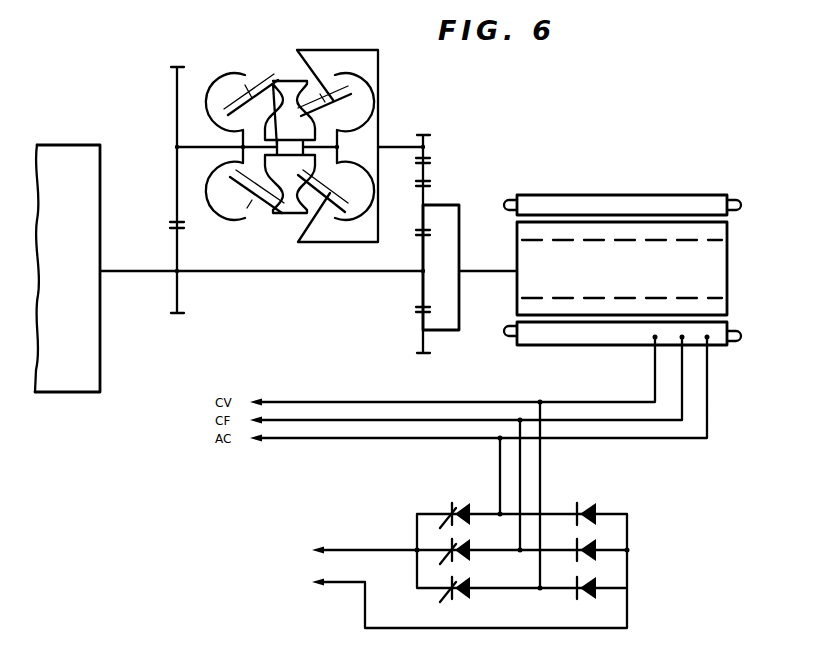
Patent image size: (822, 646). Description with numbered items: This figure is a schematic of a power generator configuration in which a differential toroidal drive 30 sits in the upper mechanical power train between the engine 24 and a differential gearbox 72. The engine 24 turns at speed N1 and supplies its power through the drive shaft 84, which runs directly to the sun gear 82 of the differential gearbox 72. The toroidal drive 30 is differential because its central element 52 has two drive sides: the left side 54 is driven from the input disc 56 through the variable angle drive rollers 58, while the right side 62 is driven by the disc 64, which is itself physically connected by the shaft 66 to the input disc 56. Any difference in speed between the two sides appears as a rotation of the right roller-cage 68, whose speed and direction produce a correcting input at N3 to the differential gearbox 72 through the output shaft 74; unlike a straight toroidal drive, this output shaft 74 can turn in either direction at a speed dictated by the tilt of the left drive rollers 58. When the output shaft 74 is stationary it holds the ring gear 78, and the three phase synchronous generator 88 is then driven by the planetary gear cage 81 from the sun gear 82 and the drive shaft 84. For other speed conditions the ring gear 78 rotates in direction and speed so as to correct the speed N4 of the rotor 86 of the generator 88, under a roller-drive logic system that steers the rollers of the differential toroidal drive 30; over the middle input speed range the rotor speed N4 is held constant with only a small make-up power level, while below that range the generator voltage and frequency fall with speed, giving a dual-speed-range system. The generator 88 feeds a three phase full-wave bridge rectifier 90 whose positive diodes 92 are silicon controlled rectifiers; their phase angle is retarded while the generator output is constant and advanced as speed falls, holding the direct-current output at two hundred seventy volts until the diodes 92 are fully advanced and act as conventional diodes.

The engine 24 is at (66, 146).
The differential toroidal drive 30 is at (152, 60).
The central element 52 is at (285, 76).
The left side 54 is at (288, 213).
The input disc 56 is at (228, 92).
The variable angle drive rollers 58 is at (232, 178).
The right side 62 is at (338, 75).
The disc 64 is at (343, 212).
The shaft 66 is at (200, 144).
The right roller-cage 68 is at (370, 50).
The differential gearbox 72 is at (466, 190).
The output shaft 74 is at (405, 148).
The ring gear 78 is at (427, 172).
The planetary gear cage 81 is at (452, 331).
The sun gear 82 is at (421, 292).
The drive shaft 84 is at (210, 273).
The rotor 86 is at (628, 290).
The three phase synchronous generator 88 is at (648, 168).
The three phase full-wave bridge rectifier 90 is at (401, 524).
The positive diodes 92 is at (462, 503).
The engine input speed N1 is at (147, 257).
The differential toroid output speed N3 is at (396, 163).
The rotor speed N4 is at (493, 262).